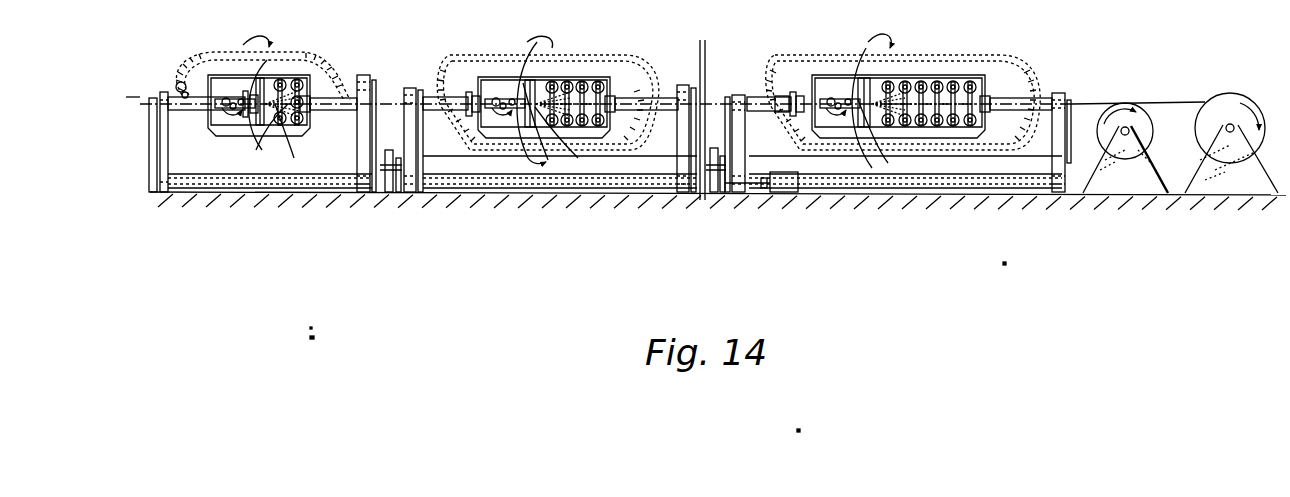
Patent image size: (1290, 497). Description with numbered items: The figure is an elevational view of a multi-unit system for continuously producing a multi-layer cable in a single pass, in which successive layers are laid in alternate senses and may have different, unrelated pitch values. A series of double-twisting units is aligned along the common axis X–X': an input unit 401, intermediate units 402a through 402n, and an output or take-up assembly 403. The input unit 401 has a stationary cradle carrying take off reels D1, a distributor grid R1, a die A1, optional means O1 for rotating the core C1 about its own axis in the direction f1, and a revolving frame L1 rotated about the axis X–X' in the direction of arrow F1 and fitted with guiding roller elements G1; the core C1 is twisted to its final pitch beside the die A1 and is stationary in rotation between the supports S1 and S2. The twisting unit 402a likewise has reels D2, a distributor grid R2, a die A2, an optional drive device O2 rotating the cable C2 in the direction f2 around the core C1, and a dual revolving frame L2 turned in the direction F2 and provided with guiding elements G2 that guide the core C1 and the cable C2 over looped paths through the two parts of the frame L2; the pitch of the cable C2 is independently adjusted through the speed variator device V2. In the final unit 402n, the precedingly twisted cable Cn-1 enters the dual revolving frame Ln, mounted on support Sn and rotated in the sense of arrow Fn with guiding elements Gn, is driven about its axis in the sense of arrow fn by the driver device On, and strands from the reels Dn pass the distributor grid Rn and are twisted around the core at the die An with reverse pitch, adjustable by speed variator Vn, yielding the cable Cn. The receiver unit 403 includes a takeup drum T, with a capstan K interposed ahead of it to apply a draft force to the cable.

The input unit 401 is at (323, 53).
The intermediate twisting unit 402a is at (640, 57).
The final intermediate twisting unit 402n is at (1021, 67).
The output or take-up assembly 403 is at (1172, 90).
The axis X-X' X is at (593, 107).
The axis X- X' is at (1185, 121).
The revolving frame L1 is at (251, 74).
The arrow F1 is at (250, 86).
The guiding roller elements G1 is at (184, 87).
The means for imparting rotation O1 is at (260, 78).
The die A1 is at (277, 88).
The support S1 is at (363, 87).
The cable core C1 is at (634, 144).
The arrow f1 is at (233, 97).
The distributor grid R1 is at (291, 139).
The take off reels D1 is at (305, 127).
The speed variator device V2 is at (389, 148).
The support S2 is at (410, 88).
The dual revolving frame L2 is at (432, 104).
The drive device O2 is at (531, 80).
The die A2 is at (546, 92).
The cable C2 is at (660, 82).
The reels D2 is at (604, 119).
The arrow f2 is at (504, 97).
The guiding elements G2 is at (452, 136).
The arrow F2 is at (526, 105).
The distributor grid R2 is at (566, 141).
The support Sn is at (741, 94).
The precedingly twisted cable Cn-1 is at (713, 102).
The dual revolving frame Ln is at (767, 95).
The guiding elements Gn is at (775, 90).
The arrow Fn is at (871, 94).
The resulting cable Cn is at (934, 60).
The arrow fn is at (838, 96).
The driver device On is at (863, 95).
The die An is at (874, 100).
The reels Dn is at (976, 118).
The distributor grid Rn is at (881, 139).
The speed variator Vn is at (715, 150).
The capstan K is at (1150, 140).
The takeup reel or drum T is at (1229, 99).